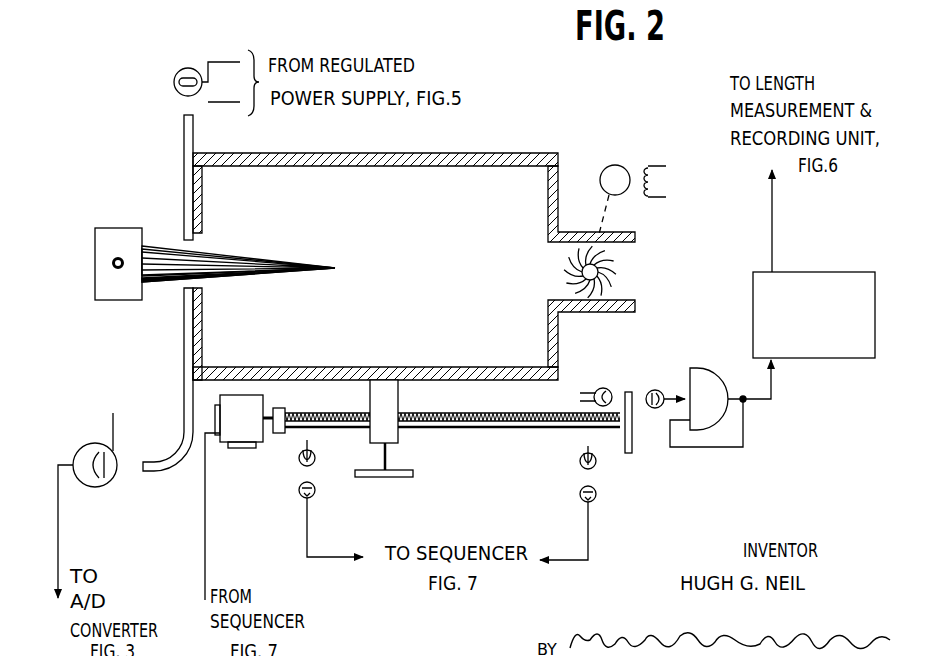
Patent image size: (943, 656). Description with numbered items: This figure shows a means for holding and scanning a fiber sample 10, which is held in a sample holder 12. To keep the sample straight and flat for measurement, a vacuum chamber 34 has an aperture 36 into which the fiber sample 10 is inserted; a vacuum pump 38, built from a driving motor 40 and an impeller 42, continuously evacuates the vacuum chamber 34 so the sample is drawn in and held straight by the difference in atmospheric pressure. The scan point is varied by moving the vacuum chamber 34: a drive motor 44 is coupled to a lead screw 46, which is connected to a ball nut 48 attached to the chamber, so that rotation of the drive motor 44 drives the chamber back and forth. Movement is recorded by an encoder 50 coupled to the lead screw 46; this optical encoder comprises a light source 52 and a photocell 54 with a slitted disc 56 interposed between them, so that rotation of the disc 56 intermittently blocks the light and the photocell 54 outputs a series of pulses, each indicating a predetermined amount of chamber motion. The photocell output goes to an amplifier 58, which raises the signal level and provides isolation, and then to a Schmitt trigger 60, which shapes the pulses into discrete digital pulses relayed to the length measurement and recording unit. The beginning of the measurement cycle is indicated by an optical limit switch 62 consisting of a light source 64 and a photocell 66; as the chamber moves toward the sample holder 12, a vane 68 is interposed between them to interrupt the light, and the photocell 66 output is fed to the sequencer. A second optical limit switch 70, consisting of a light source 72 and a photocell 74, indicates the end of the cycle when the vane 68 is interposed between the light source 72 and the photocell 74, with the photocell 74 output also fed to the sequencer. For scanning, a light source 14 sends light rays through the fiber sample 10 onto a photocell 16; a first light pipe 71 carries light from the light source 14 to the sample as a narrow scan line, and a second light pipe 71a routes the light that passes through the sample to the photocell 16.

The fiber sample 10 is at (297, 263).
The sample holder 12 is at (106, 228).
The light source 14 is at (177, 77).
The photocell 16 is at (98, 486).
The vacuum chamber 34 is at (523, 157).
The aperture 36 is at (203, 252).
The vacuum pump 38 is at (632, 145).
The driving motor 40 is at (600, 184).
The impeller 42 is at (614, 273).
The drive motor 44 is at (253, 428).
The lead screw 46 is at (331, 412).
The ball nut 48 is at (392, 410).
The encoder 50 is at (642, 368).
The light source 52 is at (600, 389).
The photocell 54 is at (673, 384).
The disc 56 is at (630, 455).
The amplifier 58 is at (729, 387).
The Schmitt trigger 60 is at (753, 291).
The optical limit switch 62 is at (359, 507).
The light source 64 is at (315, 462).
The photocell 66 is at (300, 494).
The vane 68 is at (402, 473).
The second optical limit switch 70 is at (638, 505).
The first light pipe 71 is at (184, 221).
The second light pipe 71a is at (184, 352).
The light source 72 is at (580, 465).
The photocell 74 is at (582, 501).